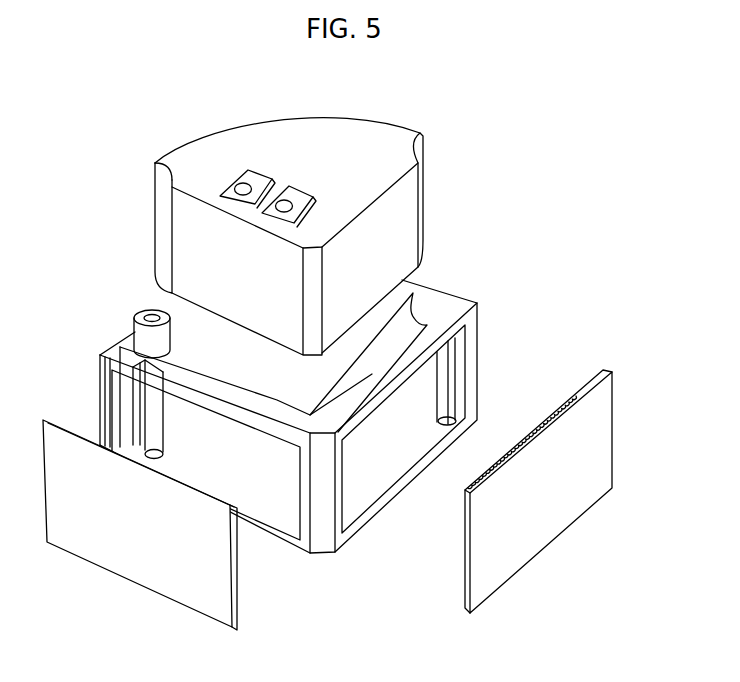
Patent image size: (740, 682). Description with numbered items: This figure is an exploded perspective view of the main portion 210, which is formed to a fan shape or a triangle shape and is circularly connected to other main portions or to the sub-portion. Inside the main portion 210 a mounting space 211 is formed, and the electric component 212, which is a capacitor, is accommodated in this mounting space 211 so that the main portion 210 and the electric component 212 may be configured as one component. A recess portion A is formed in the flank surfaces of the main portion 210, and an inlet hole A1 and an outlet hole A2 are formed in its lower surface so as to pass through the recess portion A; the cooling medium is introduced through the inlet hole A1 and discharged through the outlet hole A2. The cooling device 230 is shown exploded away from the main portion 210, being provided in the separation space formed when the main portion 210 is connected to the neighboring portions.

The main portion 210 is at (513, 263).
The mounting space 211 is at (290, 368).
The electric component 212 is at (336, 168).
The cooling device 230 is at (148, 545).
The recess portion A is at (378, 448).
The inlet hole A1 is at (450, 410).
The outlet hole A2 is at (152, 455).